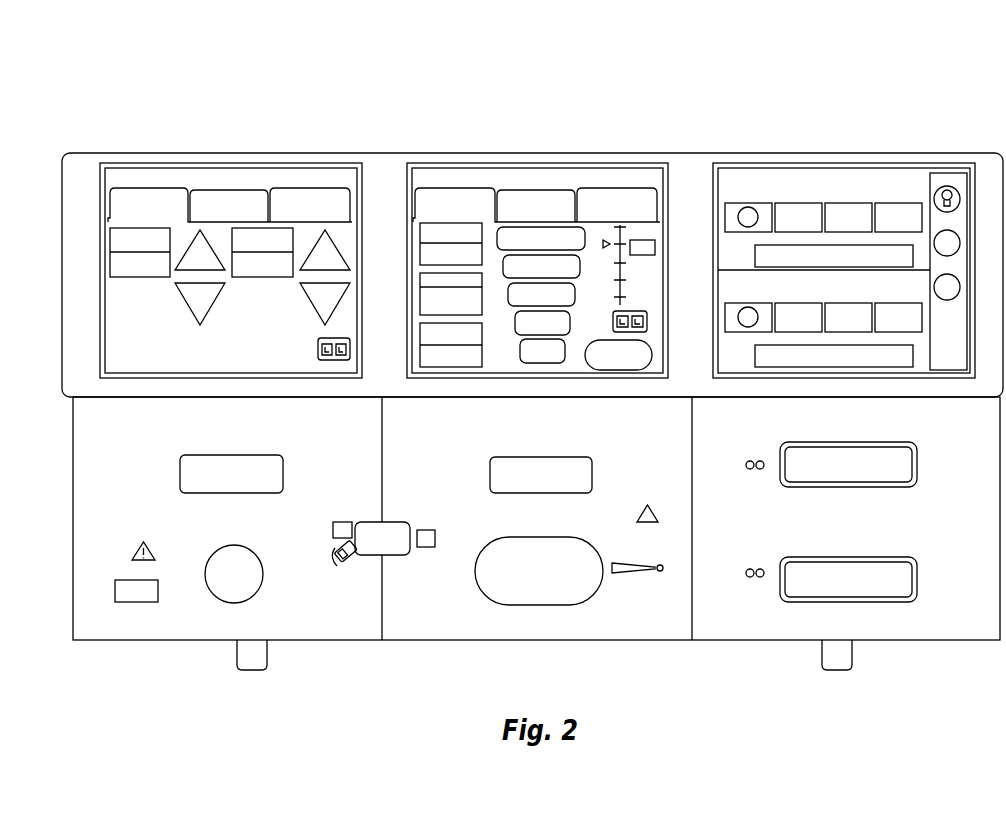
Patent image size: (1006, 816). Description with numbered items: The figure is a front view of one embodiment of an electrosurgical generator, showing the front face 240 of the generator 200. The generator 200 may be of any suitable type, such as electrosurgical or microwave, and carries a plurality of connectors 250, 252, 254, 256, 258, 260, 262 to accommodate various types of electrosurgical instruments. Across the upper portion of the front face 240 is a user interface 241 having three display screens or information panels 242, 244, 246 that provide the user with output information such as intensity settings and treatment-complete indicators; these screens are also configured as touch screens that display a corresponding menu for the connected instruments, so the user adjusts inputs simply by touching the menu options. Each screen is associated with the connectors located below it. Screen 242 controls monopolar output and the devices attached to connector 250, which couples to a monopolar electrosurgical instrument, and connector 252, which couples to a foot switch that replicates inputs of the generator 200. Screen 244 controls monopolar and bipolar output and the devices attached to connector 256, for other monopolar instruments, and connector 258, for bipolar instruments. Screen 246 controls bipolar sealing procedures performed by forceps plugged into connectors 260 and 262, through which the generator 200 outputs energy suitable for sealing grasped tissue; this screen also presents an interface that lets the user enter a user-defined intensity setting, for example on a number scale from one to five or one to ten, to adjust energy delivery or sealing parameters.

The generator 200 is at (880, 110).
The front face 240 is at (408, 153).
The user interface 241 is at (563, 132).
The display screen 242 is at (293, 163).
The display screen 244 is at (530, 163).
The display screen 246 is at (798, 163).
The connector 250 is at (180, 462).
The connector 252 is at (262, 580).
The connector 254 is at (376, 522).
The connector 256 is at (567, 457).
The connector 258 is at (605, 583).
The connector 260 is at (917, 460).
The connector 262 is at (917, 572).